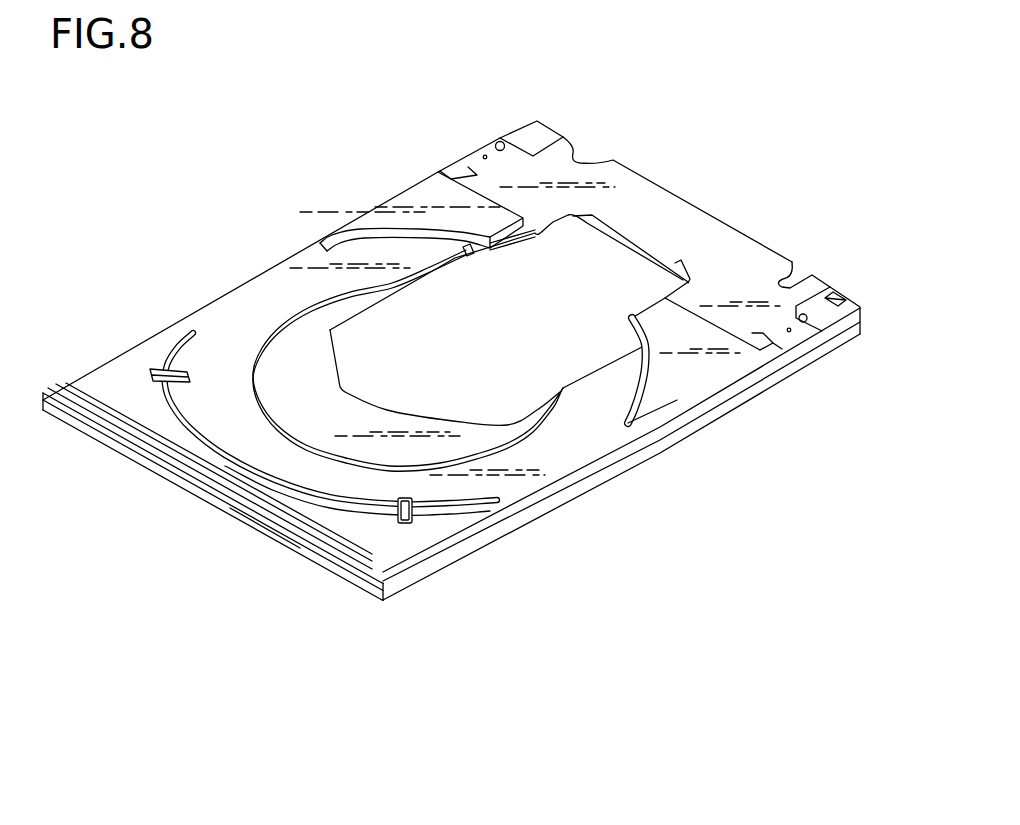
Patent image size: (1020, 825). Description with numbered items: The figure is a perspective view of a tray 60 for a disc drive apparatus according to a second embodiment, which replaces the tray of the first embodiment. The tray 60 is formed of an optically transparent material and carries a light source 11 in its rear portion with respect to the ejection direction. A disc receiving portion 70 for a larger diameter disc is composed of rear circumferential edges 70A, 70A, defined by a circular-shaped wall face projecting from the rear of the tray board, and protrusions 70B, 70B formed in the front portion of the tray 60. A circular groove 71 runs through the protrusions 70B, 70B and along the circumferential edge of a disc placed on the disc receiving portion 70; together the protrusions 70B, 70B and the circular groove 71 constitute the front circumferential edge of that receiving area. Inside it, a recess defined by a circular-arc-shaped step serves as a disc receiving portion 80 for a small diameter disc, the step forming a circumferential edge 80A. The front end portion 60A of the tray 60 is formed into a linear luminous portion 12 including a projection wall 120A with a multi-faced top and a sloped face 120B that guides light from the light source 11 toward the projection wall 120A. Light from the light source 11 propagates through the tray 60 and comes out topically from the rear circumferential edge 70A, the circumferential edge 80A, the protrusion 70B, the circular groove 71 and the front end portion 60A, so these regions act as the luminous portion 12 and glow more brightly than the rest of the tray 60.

The tray 60 is at (182, 218).
The front end portion 60A is at (225, 540).
The luminous portion 12 is at (427, 652).
The projection wall 120A is at (327, 557).
The sloped face 120B is at (383, 593).
The light source 11 is at (460, 176).
The disc receiving portion 70 is at (218, 318).
The rear circumferential edge 70A is at (382, 230).
The protrusion 70B is at (157, 367).
The circular groove 71 is at (213, 460).
The disc receiving portion 80 is at (300, 355).
The circumferential edge 80A is at (362, 292).